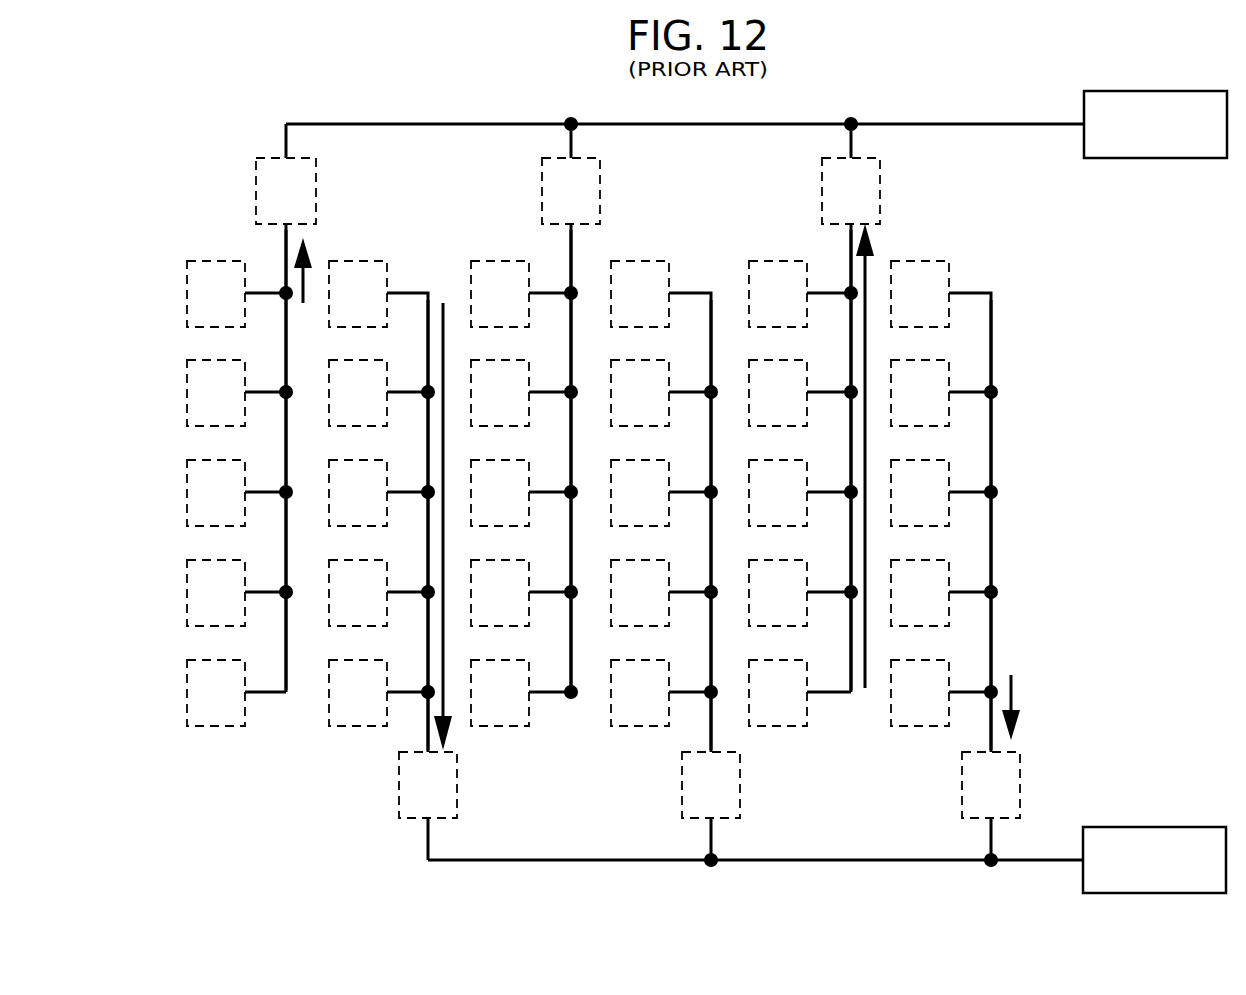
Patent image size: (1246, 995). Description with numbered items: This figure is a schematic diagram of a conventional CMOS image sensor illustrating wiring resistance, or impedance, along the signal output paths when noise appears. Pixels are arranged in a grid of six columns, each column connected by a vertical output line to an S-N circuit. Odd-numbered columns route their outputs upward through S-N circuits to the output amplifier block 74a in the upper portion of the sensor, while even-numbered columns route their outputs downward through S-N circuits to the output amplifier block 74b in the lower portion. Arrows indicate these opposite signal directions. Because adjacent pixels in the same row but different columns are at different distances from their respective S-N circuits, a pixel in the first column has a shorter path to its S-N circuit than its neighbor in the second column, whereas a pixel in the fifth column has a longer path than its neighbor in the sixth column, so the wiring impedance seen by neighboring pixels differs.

The output amplifier block 74a is at (1150, 91).
The output amplifier block 74b is at (1150, 827).